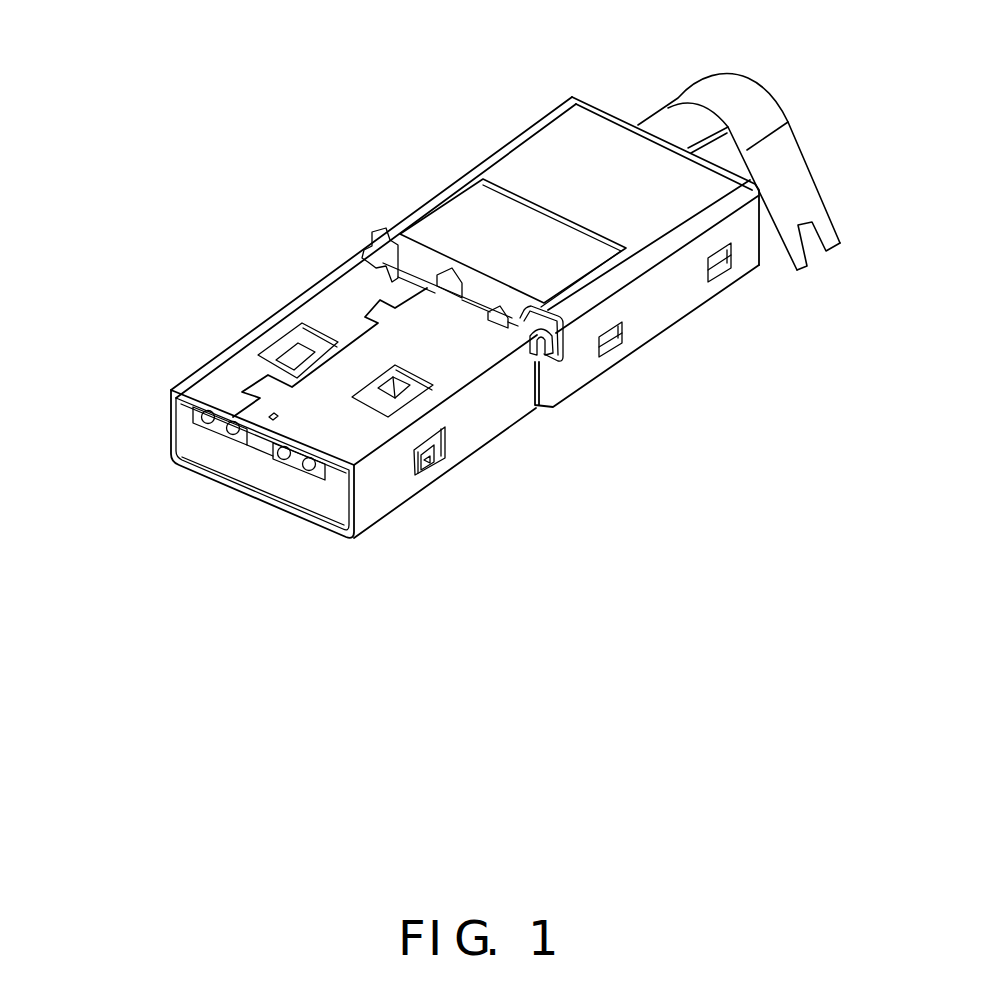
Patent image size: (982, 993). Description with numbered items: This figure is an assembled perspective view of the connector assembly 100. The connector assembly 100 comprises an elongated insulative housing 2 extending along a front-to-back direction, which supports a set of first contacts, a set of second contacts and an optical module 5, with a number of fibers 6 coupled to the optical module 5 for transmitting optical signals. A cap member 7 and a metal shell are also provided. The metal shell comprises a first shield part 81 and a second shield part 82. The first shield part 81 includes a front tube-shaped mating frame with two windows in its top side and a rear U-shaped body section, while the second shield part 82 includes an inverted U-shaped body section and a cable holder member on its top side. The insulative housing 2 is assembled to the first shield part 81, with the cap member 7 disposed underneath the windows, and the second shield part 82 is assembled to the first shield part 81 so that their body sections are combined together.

The connector assembly 100 is at (376, 163).
The insulative housing 2 is at (262, 447).
The optical module 5 is at (293, 468).
The fibers 6 is at (137, 443).
The cap member 7 is at (405, 385).
The first shield part 81 is at (497, 407).
The second shield part 82 is at (653, 313).